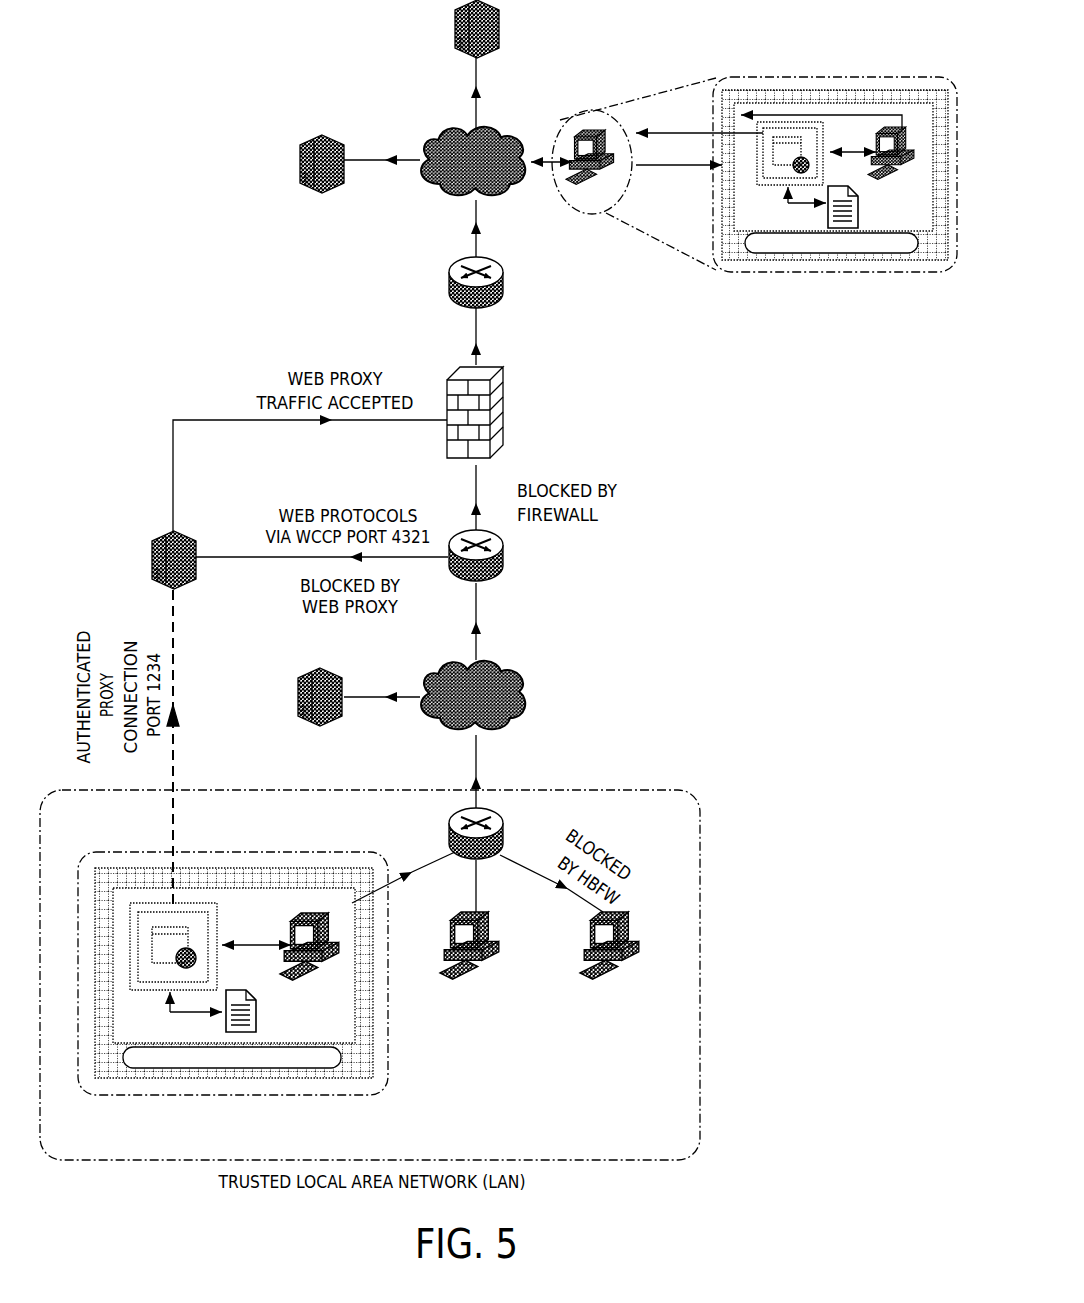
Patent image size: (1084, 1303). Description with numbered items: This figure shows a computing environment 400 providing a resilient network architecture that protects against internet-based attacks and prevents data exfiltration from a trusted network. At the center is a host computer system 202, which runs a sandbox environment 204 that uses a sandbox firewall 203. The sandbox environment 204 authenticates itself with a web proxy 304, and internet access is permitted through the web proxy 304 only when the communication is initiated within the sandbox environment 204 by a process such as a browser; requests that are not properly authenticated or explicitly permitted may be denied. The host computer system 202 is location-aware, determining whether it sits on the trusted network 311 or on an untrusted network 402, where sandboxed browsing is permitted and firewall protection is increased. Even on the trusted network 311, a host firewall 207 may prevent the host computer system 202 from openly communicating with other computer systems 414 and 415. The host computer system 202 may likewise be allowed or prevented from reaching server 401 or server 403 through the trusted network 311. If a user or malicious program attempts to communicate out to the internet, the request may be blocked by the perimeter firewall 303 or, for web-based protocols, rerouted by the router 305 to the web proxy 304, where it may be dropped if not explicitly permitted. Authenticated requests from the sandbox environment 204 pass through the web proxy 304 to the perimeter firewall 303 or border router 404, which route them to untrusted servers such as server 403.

The computing environment 400 is at (135, 222).
The server 401 is at (490, 50).
The untrusted network 402 is at (612, 170).
The server 403 is at (316, 142).
The border router 404 is at (498, 300).
The perimeter firewall 303 is at (493, 392).
The web proxy 304 is at (158, 538).
The router 305 is at (498, 580).
The trusted network 311 is at (528, 663).
The host computer system 202 is at (815, 78).
The sandbox firewall 203 is at (205, 912).
The sandbox environment 204 is at (183, 905).
The host firewall 207 is at (322, 856).
The computer system 414 is at (473, 1007).
The computer system 415 is at (615, 1007).